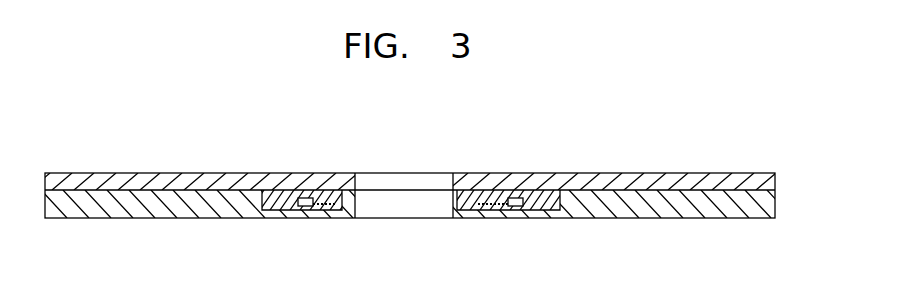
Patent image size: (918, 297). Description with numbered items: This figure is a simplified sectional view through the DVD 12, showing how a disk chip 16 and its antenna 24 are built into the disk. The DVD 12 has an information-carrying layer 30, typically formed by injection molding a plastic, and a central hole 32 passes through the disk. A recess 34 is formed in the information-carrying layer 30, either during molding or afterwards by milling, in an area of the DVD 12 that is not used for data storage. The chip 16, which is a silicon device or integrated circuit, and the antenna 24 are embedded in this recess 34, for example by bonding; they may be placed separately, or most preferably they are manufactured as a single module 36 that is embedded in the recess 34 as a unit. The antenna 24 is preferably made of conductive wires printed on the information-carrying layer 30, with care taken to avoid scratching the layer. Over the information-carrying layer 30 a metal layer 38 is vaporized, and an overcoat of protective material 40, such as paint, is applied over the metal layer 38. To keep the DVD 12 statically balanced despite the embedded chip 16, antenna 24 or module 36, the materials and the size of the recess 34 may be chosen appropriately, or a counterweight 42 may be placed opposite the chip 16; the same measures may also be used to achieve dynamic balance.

The DVD 12 is at (168, 97).
The disk chip 16 is at (510, 206).
The antenna 24 is at (322, 201).
The information-carrying layer 30 is at (738, 217).
The central hole 32 is at (393, 172).
The recess 34 is at (560, 201).
The module 36 is at (272, 206).
The metal layer 38 is at (672, 182).
The protective material 40 is at (736, 172).
The counterweight 42 is at (305, 185).